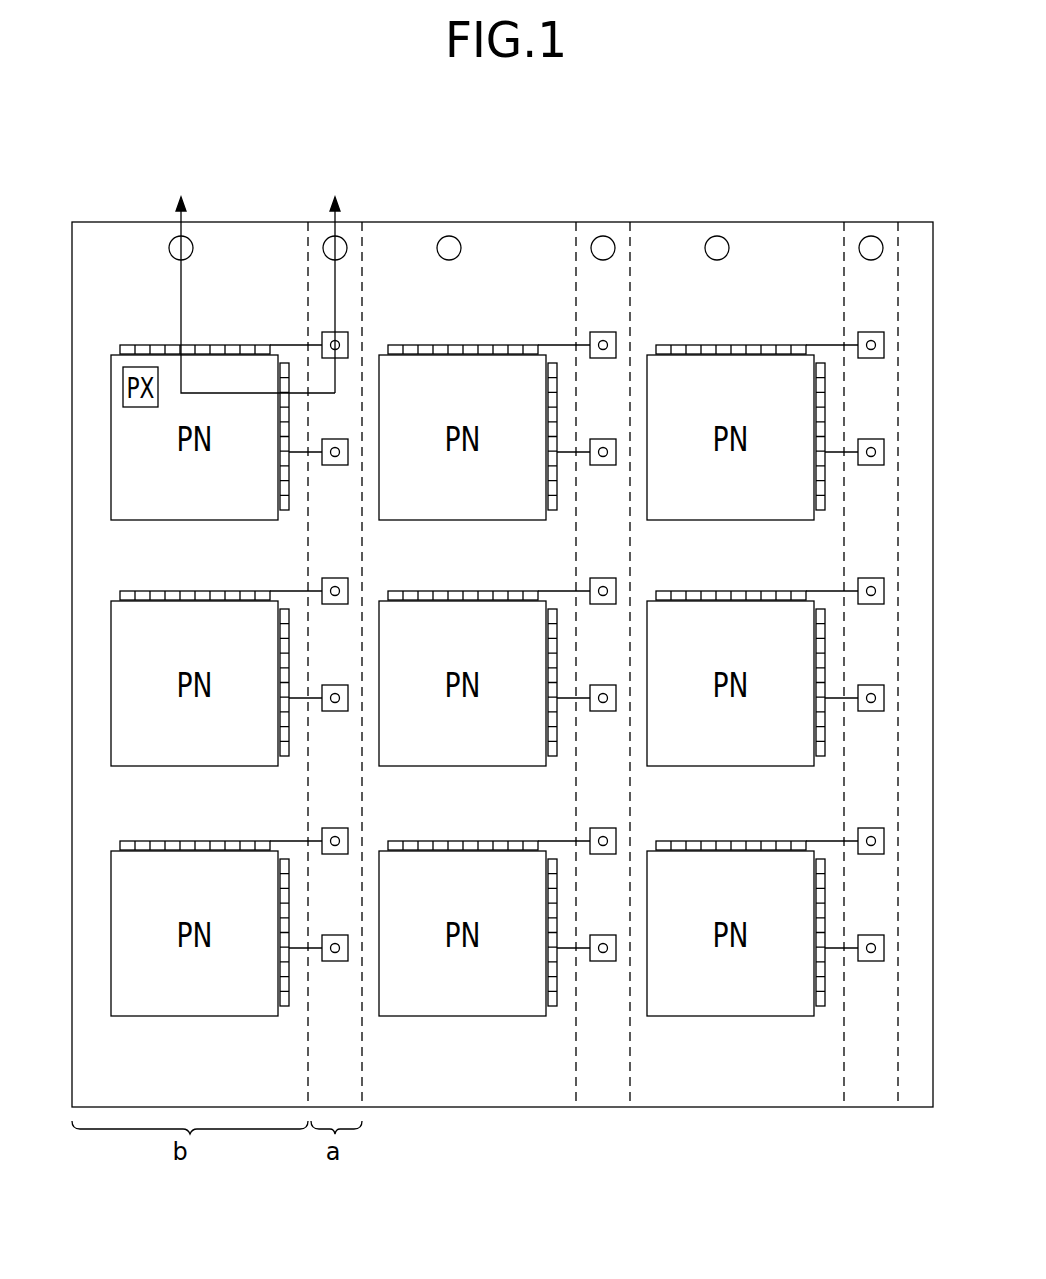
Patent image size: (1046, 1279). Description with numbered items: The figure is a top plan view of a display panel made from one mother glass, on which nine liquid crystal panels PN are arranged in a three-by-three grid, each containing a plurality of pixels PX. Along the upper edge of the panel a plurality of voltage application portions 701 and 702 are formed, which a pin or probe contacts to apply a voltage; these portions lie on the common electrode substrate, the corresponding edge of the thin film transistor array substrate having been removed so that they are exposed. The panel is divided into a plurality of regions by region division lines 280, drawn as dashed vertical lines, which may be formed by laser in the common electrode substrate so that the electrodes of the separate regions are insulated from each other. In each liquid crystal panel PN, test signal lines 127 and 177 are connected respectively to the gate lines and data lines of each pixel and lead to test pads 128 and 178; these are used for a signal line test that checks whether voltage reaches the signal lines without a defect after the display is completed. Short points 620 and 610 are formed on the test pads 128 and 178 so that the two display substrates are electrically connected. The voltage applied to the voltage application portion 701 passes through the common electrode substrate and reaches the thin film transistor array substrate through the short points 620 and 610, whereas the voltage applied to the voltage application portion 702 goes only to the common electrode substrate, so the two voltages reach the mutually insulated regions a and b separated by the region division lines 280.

The voltage application portion 702 is at (193, 248).
The voltage application portion 701 is at (347, 248).
The test signal line 177 is at (127, 347).
The test pad 178 is at (323, 337).
The short point 610 is at (350, 345).
The short point 620 is at (335, 439).
The test pad 128 is at (335, 465).
The test signal line 127 is at (283, 510).
The region division line 280 is at (576, 1075).